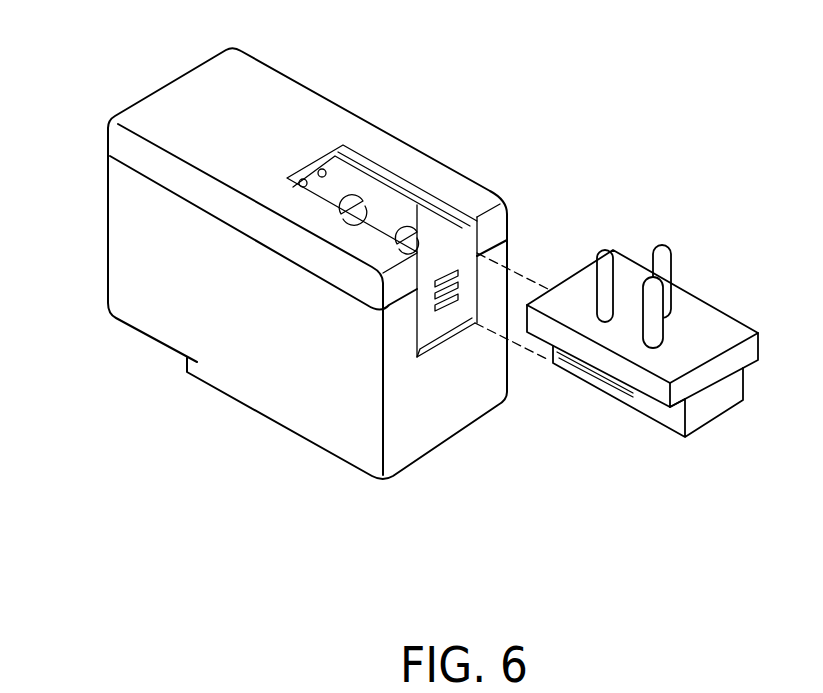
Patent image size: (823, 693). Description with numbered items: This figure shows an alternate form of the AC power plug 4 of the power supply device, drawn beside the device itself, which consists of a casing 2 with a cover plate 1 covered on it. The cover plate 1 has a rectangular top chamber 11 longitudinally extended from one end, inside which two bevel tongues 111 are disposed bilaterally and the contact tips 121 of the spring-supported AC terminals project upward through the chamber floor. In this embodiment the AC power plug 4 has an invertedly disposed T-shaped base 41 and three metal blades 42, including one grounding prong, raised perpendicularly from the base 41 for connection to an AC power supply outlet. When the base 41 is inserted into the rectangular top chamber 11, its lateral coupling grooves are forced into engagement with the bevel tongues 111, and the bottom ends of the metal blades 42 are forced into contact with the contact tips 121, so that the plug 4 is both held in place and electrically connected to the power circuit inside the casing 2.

The cover plate 1 is at (292, 88).
The casing 2 is at (123, 233).
The rectangular top chamber 11 is at (480, 215).
The bevel tongues 111 is at (377, 173).
The contact tips 121 is at (353, 198).
The AC power plug 4 is at (657, 335).
The base 41 is at (723, 407).
The metal blades 42 is at (603, 250).